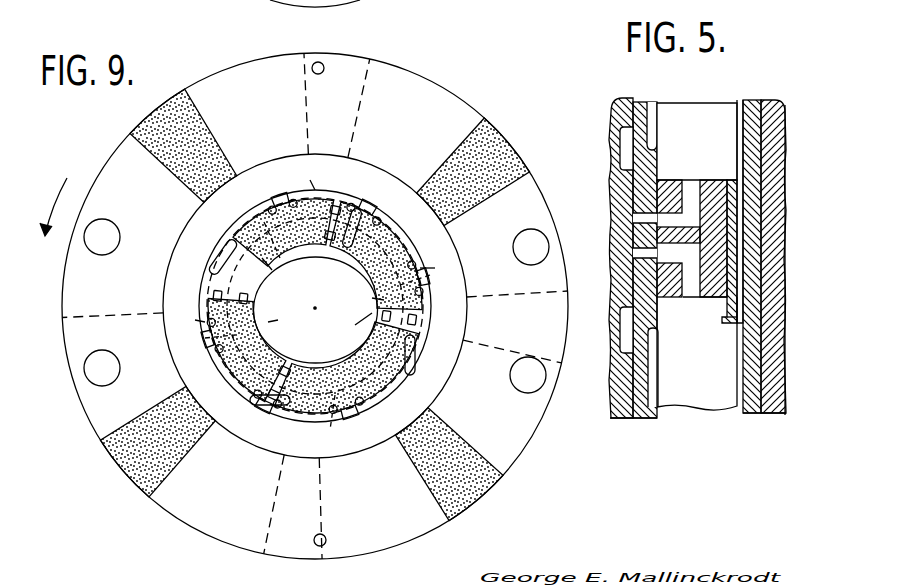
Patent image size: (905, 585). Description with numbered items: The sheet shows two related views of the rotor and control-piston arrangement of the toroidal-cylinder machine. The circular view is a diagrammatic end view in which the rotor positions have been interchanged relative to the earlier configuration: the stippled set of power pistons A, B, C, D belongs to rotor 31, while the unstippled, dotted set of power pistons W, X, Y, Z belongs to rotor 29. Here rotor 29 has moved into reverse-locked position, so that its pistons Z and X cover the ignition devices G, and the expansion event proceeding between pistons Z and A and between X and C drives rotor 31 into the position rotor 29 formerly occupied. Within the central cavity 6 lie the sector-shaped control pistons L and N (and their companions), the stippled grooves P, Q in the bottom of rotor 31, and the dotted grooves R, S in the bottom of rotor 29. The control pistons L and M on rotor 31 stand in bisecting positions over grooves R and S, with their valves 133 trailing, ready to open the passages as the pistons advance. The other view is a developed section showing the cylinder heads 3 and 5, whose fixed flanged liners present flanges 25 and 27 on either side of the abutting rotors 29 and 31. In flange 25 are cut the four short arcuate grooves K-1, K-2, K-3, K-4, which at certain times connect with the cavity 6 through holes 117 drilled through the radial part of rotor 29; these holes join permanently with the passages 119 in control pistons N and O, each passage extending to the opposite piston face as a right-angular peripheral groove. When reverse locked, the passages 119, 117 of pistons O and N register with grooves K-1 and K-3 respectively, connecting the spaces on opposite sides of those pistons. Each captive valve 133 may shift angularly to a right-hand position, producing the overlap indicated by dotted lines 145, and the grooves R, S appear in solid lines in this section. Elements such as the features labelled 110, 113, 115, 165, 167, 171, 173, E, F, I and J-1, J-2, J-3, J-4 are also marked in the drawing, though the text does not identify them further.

In FIG. 5, the cylinder head 3 is at (609, 246).
In FIG. 5, the cylinder head 5 is at (785, 112).
In FIG. 5, the cavity 6 is at (699, 386).
In FIG. 5, the liner flange 25 is at (624, 98).
In FIG. 5, the liner flange 27 is at (770, 100).
In FIG. 5, the rotor 29 is at (653, 148).
In FIG. 9, the rotor 31 is at (197, 219).
In FIG. 5, the rotor 31 is at (742, 102).
In FIG. 9, the rotor ring 110 is at (270, 187).
In FIG. 9, the pin 113 is at (303, 170).
In FIG. 9, the shoe 115 is at (252, 218).
In FIG. 9, the holes 117 is at (418, 262).
In FIG. 5, the holes 117 is at (633, 253).
In FIG. 9, the passages 119 is at (210, 300).
In FIG. 5, the passages 119 is at (690, 183).
In FIG. 9, the port control valve 133 is at (240, 232).
In FIG. 5, the port control valve 133 is at (731, 178).
In FIG. 5, the right-hand overlap 145 is at (718, 284).
In FIG. 9, the roller 165 is at (352, 270).
In FIG. 9, the roller 167 is at (264, 275).
In FIG. 9, the hub 171 is at (287, 292).
In FIG. 9, the pawl 173 is at (336, 248).
In FIG. 9, the power piston A is at (200, 125).
In FIG. 9, the power piston B is at (177, 457).
In FIG. 9, the power piston C is at (466, 446).
In FIG. 9, the power piston D is at (478, 200).
In FIG. 9, the port E is at (111, 226).
In FIG. 9, the direction of rotation F is at (43, 194).
In FIG. 9, the ignition devices G is at (311, 68).
In FIG. 9, the port I is at (528, 230).
In FIG. 9, the slot J-1 is at (360, 205).
In FIG. 9, the slot J-2 is at (214, 253).
In FIG. 9, the slot J-3 is at (262, 404).
In FIG. 9, the slot J-4 is at (418, 360).
In FIG. 9, the arcuate groove K-1 is at (425, 275).
In FIG. 5, the arcuate groove K-1 is at (621, 133).
In FIG. 9, the arcuate groove K-2 is at (290, 200).
In FIG. 9, the arcuate groove K-3 is at (212, 345).
In FIG. 9, the arcuate groove K-4 is at (345, 420).
In FIG. 5, the arcuate groove K-4 is at (622, 330).
In FIG. 9, the control piston L is at (309, 176).
In FIG. 9, the control piston N is at (192, 320).
In FIG. 5, the control piston O is at (705, 317).
In FIG. 9, the sector-shaped groove P is at (279, 320).
In FIG. 9, the sector-shaped groove Q is at (397, 281).
In FIG. 5, the sector-shaped groove Q is at (741, 165).
In FIG. 9, the sector-shaped groove R is at (258, 262).
In FIG. 5, the sector-shaped groove R is at (650, 103).
In FIG. 9, the sector-shaped groove S is at (357, 321).
In FIG. 5, the sector-shaped groove S is at (652, 408).
In FIG. 9, the power piston W is at (108, 317).
In FIG. 9, the power piston X is at (270, 512).
In FIG. 9, the power piston Y is at (493, 348).
In FIG. 9, the power piston Z is at (361, 106).